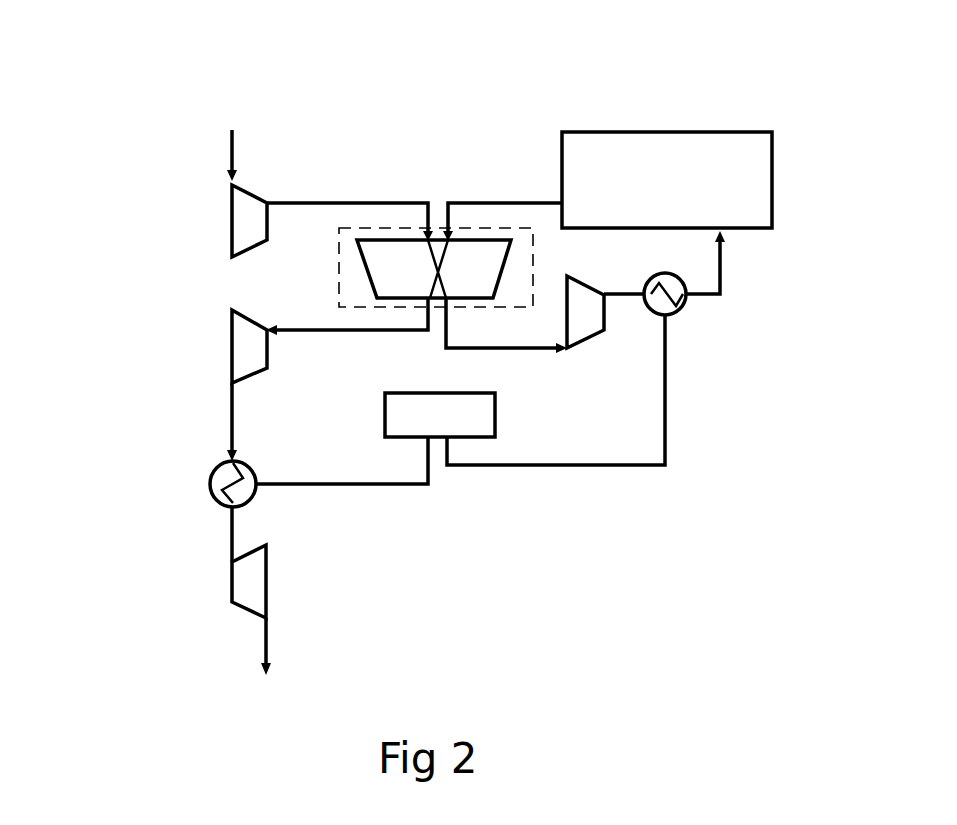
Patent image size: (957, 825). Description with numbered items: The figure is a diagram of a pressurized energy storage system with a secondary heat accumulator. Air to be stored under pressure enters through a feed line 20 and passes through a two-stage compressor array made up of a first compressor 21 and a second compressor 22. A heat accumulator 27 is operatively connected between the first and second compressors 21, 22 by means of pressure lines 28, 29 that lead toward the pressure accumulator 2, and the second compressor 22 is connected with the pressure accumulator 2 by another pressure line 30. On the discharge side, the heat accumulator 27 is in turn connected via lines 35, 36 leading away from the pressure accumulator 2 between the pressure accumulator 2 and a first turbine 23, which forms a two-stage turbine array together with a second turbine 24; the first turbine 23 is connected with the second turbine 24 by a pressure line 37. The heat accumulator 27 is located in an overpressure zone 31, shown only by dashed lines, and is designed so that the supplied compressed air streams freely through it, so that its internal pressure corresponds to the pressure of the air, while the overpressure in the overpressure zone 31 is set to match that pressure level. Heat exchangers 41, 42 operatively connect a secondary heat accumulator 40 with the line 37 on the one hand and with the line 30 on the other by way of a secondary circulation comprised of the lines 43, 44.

The pressure accumulator 2 is at (668, 200).
The feed line 20 is at (232, 178).
The first compressor 21 is at (248, 215).
The second compressor 22 is at (582, 317).
The first turbine 23 is at (250, 352).
The second turbine 24 is at (247, 583).
The heat accumulator 27 is at (462, 270).
The pressure line 28 is at (310, 203).
The pressure line 29 is at (542, 350).
The pressure line 30 is at (720, 282).
The overpressure zone 31 is at (367, 230).
The line 35 is at (513, 204).
The line 36 is at (310, 328).
The pressure line 37 is at (230, 424).
The secondary heat accumulator 40 is at (473, 413).
The heat exchanger 41 is at (210, 483).
The heat exchanger 42 is at (678, 308).
The line 43 is at (357, 487).
The line 44 is at (595, 470).